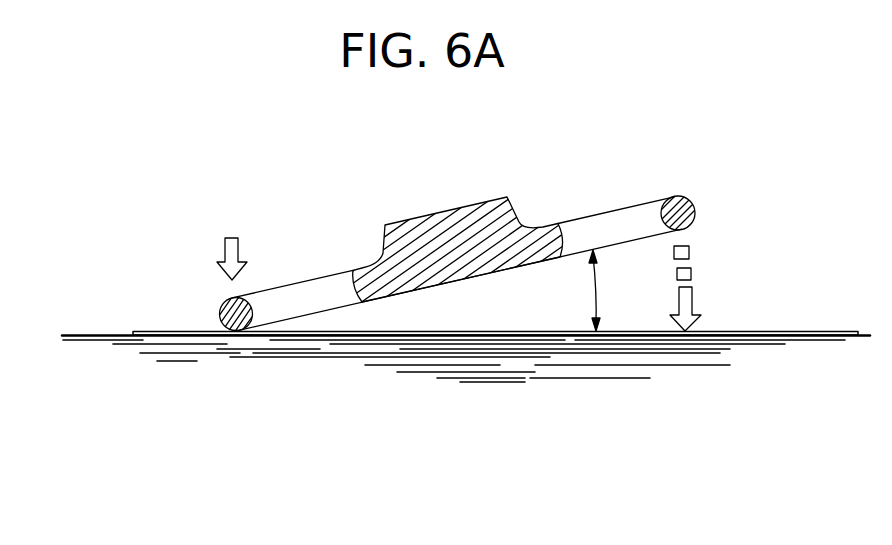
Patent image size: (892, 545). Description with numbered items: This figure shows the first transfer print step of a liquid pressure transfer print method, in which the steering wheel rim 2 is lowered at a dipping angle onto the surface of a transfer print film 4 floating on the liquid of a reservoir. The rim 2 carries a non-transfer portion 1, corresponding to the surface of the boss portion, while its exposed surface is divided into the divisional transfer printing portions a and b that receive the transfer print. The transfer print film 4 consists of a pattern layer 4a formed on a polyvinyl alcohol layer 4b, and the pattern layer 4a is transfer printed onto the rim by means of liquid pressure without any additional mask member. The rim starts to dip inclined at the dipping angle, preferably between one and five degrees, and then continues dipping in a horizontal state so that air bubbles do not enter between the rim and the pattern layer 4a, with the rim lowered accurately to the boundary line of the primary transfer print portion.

The non-transfer portion 1 is at (481, 218).
The steering wheel rim 2 is at (457, 229).
The divisional transfer printing portion a is at (619, 218).
The divisional transfer printing portion b is at (317, 287).
The transfer print film 4 is at (466, 294).
The pattern layer 4a is at (210, 262).
The polyvinyl alcohol layer 4b is at (190, 328).